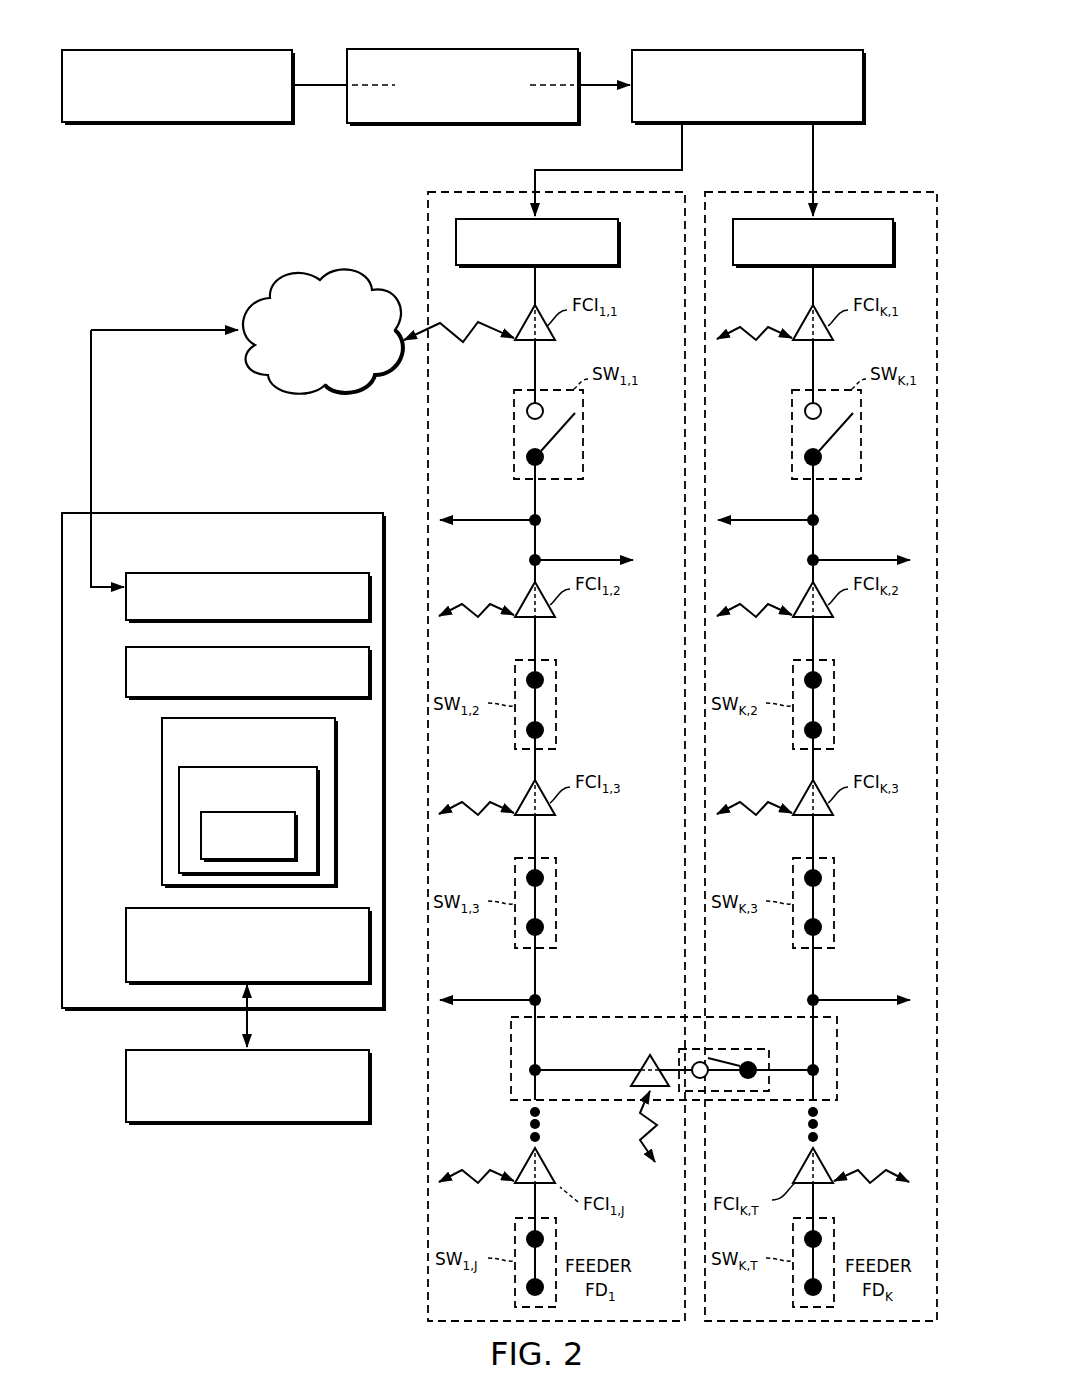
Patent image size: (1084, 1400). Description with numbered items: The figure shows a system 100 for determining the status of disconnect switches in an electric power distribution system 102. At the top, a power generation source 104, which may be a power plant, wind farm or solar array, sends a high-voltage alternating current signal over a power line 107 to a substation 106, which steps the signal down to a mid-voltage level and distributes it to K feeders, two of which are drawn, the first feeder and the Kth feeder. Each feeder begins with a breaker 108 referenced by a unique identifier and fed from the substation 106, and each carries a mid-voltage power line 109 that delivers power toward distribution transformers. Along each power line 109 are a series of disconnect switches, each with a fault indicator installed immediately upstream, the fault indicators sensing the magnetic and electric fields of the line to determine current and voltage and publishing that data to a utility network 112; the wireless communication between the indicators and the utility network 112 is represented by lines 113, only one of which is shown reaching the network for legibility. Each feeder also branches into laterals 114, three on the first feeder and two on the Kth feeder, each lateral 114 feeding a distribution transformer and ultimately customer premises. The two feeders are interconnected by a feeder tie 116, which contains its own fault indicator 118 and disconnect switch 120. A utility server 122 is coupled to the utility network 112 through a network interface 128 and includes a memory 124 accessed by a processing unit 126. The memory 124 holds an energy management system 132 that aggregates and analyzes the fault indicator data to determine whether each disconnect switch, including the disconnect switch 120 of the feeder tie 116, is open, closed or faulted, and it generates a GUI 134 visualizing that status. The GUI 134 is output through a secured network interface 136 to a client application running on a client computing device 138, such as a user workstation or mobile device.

The system 100 is at (143, 228).
The electric power distribution system 102 is at (372, 33).
The power generation source 104 is at (177, 123).
The substation 106 is at (865, 85).
The power line 107 is at (465, 123).
The breaker 108 is at (456, 240).
The power line 109 is at (535, 290).
The utility network 112 is at (327, 400).
The lines 113 is at (463, 343).
The laterals 114 is at (485, 522).
The feeder tie 116 is at (511, 1080).
The fault indicator 118 is at (650, 1053).
The disconnect switch 120 is at (745, 1095).
The utility server 122 is at (88, 1010).
The memory 124 is at (162, 742).
The processing unit 126 is at (126, 670).
The network interface 128 is at (126, 617).
The energy management system 132 is at (179, 803).
The GUI 134 is at (201, 838).
The secured network interface 136 is at (126, 945).
The client computing device 138 is at (126, 1088).